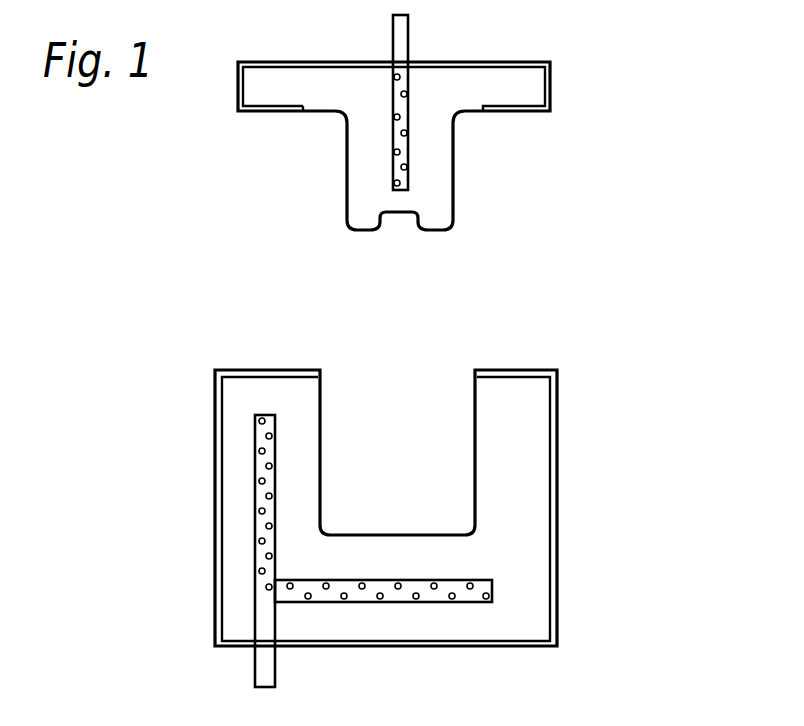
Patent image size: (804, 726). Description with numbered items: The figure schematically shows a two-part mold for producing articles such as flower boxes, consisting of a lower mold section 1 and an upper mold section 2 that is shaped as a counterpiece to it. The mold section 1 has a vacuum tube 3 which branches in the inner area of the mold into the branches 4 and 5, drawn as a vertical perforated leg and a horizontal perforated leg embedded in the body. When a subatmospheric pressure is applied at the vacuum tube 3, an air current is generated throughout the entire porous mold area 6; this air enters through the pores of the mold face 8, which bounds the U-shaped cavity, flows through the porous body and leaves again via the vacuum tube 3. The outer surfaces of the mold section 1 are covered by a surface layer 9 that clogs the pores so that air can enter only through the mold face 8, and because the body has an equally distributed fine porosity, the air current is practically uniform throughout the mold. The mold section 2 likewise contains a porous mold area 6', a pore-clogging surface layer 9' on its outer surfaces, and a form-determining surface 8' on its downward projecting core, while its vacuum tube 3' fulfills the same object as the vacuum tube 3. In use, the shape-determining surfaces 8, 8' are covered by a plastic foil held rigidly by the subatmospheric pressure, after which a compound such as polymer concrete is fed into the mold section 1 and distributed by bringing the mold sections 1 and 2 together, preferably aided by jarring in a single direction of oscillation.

The mold section 1 is at (417, 493).
The mold section 2 is at (449, 122).
The vacuum tube 3 is at (201, 556).
The vacuum tube 3' is at (439, 102).
The branch 4 is at (430, 595).
The branch 5 is at (262, 497).
The porous mold area 6 is at (415, 467).
The porous mold area 6' is at (315, 171).
The mold face 8 is at (397, 431).
The form determining surface 8' is at (394, 146).
The surface layer 9 is at (387, 502).
The pore clogging surface layer 9' is at (432, 94).